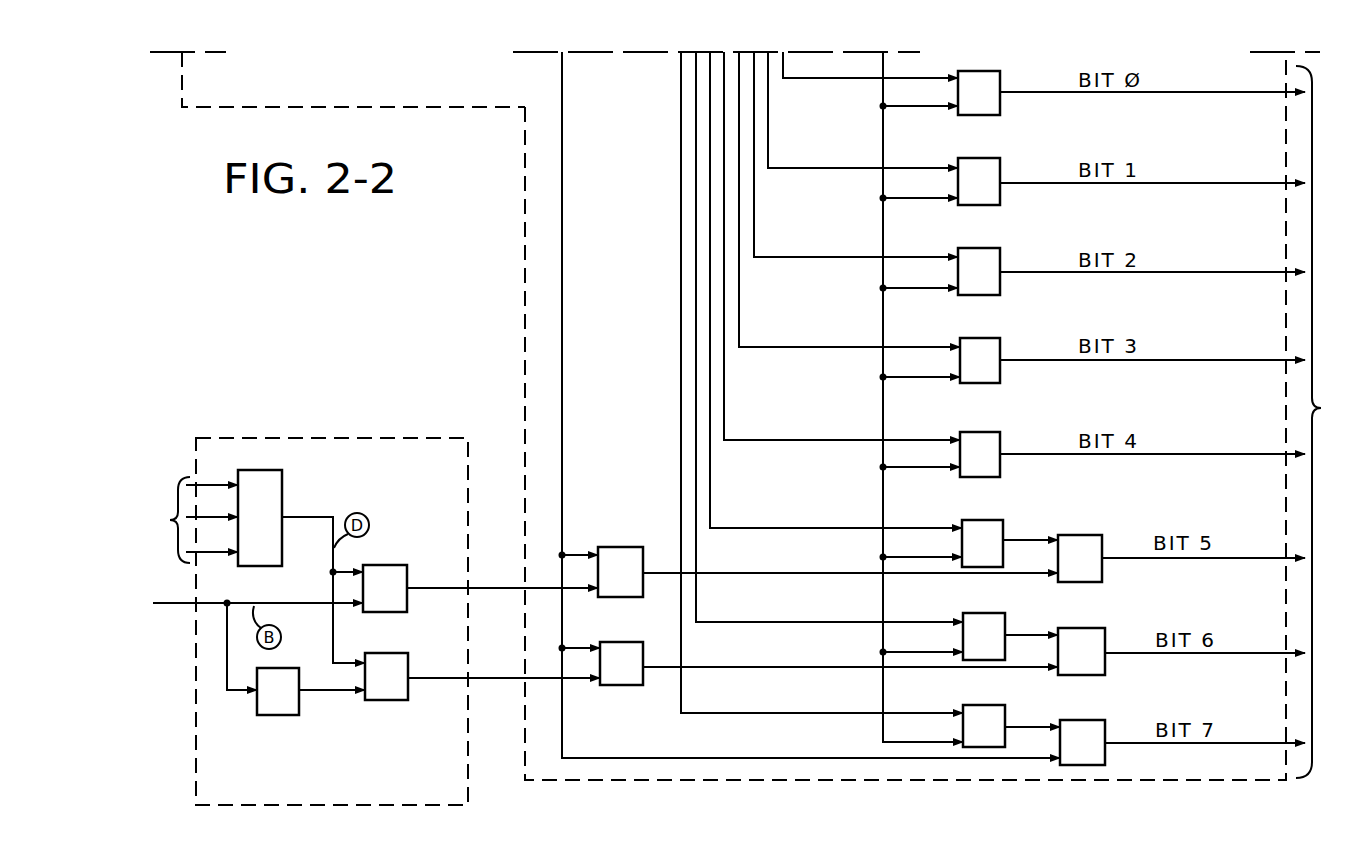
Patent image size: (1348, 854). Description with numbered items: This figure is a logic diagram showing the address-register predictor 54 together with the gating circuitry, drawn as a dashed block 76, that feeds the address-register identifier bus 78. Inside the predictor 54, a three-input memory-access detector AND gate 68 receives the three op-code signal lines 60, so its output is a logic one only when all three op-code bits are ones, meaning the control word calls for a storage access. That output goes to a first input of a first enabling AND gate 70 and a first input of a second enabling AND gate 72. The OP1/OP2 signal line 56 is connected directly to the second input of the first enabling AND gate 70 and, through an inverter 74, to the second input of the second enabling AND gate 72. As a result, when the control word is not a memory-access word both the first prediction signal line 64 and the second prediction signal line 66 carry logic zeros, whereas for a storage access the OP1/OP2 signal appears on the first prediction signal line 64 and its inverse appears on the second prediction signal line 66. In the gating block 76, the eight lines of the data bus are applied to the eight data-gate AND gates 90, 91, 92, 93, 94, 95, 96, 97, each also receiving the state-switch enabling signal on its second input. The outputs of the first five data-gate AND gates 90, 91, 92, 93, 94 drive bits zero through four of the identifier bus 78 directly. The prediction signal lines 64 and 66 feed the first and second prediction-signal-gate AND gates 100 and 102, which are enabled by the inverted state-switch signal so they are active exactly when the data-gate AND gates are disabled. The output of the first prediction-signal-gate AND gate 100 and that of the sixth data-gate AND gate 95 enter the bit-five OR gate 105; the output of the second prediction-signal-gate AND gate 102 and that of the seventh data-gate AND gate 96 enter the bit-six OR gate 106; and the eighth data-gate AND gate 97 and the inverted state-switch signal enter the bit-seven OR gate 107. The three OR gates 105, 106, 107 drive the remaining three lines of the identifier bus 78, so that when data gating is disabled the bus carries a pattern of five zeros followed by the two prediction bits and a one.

The address-register predictor 54 is at (354, 432).
The OP1/OP2 signal line 56 is at (186, 604).
The op-code signal lines 60 is at (192, 520).
The first prediction signal line 64 is at (511, 590).
The second prediction signal line 66 is at (482, 680).
The memory-access detector AND gate 68 is at (283, 484).
The first enabling AND gate 70 is at (397, 565).
The second enabling AND gate 72 is at (395, 653).
The inverter 74 is at (270, 716).
The bit gating logic block 76 is at (524, 226).
The address-register identifier bus 78 is at (1322, 422).
The data-gate AND gate 90 is at (988, 71).
The data-gate AND gate 91 is at (986, 158).
The data-gate AND gate 92 is at (988, 248).
The data-gate AND gate 93 is at (990, 338).
The data-gate AND gate 94 is at (993, 432).
The sixth data-gate AND gate 95 is at (992, 520).
The seventh data-gate AND gate 96 is at (994, 613).
The eighth data-gate AND gate 97 is at (990, 705).
The first prediction-signal-gate AND gate 100 is at (620, 547).
The second prediction-signal-gate AND gate 102 is at (625, 642).
The bit-5 OR gate 105 is at (1078, 535).
The bit-6 OR gate 106 is at (1078, 628).
The bit-7 OR gate 107 is at (1082, 720).